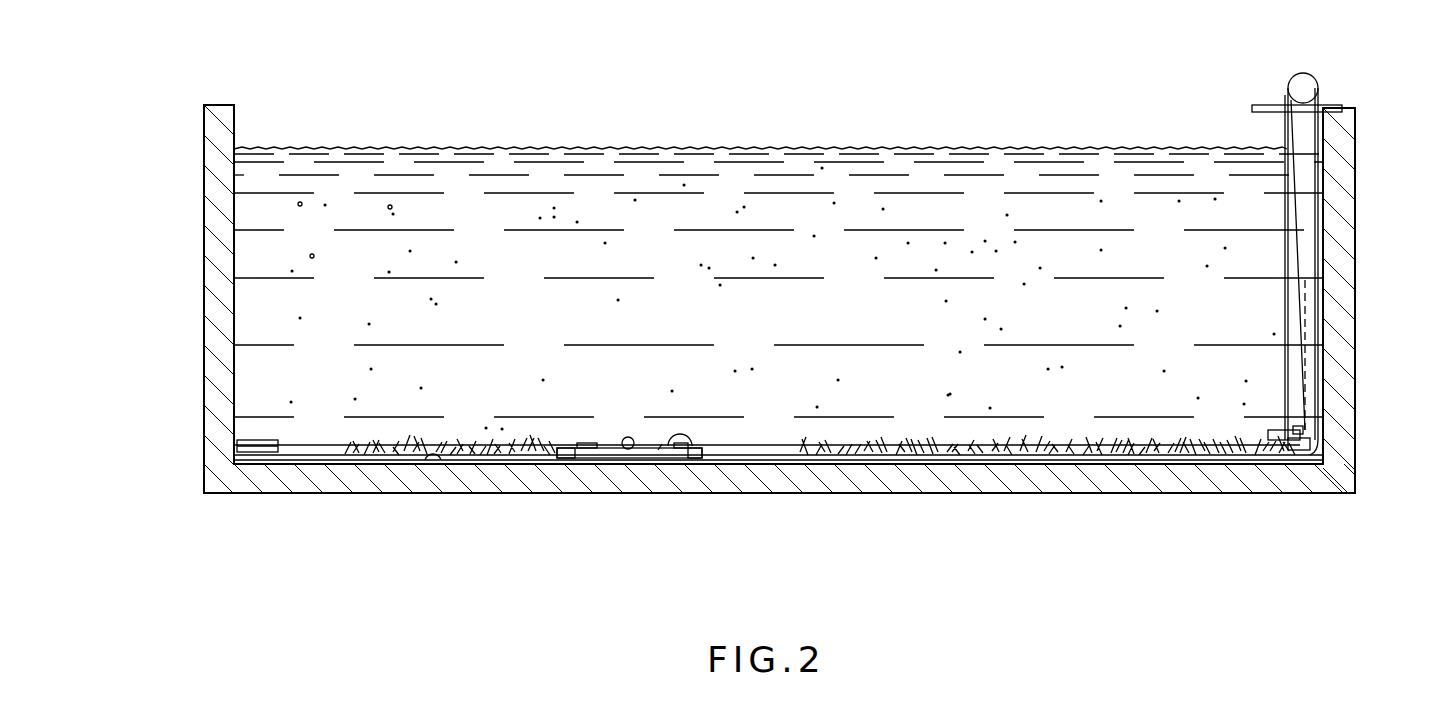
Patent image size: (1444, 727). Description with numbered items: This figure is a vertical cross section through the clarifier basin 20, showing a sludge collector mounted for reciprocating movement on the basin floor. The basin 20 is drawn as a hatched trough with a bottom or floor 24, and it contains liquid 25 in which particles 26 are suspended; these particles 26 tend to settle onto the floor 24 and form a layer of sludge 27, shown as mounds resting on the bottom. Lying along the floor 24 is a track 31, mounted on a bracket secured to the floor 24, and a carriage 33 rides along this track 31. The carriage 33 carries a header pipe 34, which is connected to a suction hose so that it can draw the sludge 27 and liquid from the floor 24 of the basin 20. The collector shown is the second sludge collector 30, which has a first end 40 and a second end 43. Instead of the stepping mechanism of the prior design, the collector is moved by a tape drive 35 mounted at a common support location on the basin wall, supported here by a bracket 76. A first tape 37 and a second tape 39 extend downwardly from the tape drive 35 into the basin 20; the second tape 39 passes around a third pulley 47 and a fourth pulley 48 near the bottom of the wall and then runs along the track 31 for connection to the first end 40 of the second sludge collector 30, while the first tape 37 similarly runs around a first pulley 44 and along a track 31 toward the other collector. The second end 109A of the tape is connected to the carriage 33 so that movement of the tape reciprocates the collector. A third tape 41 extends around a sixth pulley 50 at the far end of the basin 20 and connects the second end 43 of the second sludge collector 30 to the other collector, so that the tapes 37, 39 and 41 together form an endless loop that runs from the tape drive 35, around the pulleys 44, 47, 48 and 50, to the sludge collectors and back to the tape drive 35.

The clarifier basin 20 is at (1128, 496).
The liquid 25 is at (380, 147).
The particles 26 is at (314, 254).
The third tape 41 is at (303, 443).
The track 31 is at (343, 457).
The floor 24 is at (432, 458).
The sludge 27 is at (1010, 450).
The sixth pulley 50 is at (255, 438).
The carriage 33 is at (644, 447).
The second end of second sludge collector 43 is at (560, 442).
The header pipe 34 is at (624, 437).
The second sludge collector 30 is at (660, 432).
The first end of second sludge collector 40 is at (697, 448).
The second end of tape 109A is at (662, 444).
The tape drive 35 is at (1305, 84).
The bracket 76 is at (1262, 105).
The second tape 39 is at (800, 446).
The first tape 37 is at (1283, 330).
The first pulley 44 is at (1270, 433).
The third pulley 47 is at (1312, 442).
The fourth pulley 48 is at (1310, 430).